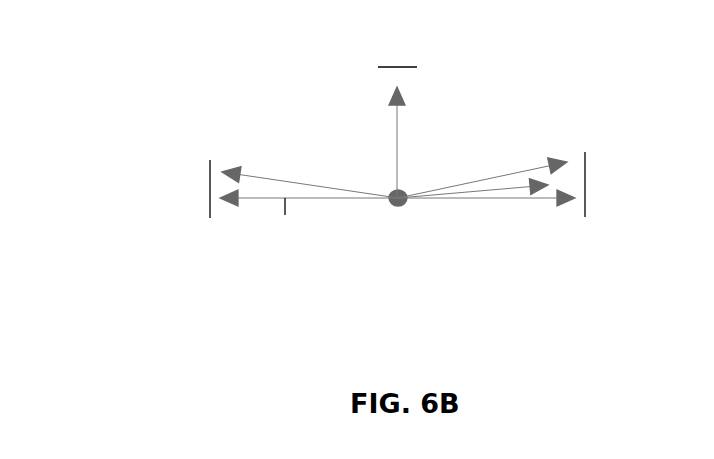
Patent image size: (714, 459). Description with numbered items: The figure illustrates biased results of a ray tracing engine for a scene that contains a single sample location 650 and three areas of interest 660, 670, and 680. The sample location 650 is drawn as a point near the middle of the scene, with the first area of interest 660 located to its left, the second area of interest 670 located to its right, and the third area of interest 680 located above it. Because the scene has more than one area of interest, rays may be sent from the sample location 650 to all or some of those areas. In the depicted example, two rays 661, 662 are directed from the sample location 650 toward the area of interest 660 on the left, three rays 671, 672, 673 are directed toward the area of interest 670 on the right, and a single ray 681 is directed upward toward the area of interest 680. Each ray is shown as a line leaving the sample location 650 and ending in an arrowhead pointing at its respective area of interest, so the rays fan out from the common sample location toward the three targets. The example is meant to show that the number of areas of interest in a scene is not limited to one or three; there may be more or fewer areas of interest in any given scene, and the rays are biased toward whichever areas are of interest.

The sample location 650 is at (398, 218).
The area of interest 660 is at (208, 177).
The ray 661 is at (309, 218).
The ray 662 is at (273, 178).
The area of interest 670 is at (585, 176).
The ray 671 is at (472, 199).
The ray 672 is at (473, 192).
The ray 673 is at (482, 180).
The area of interest 680 is at (397, 67).
The ray 681 is at (397, 143).